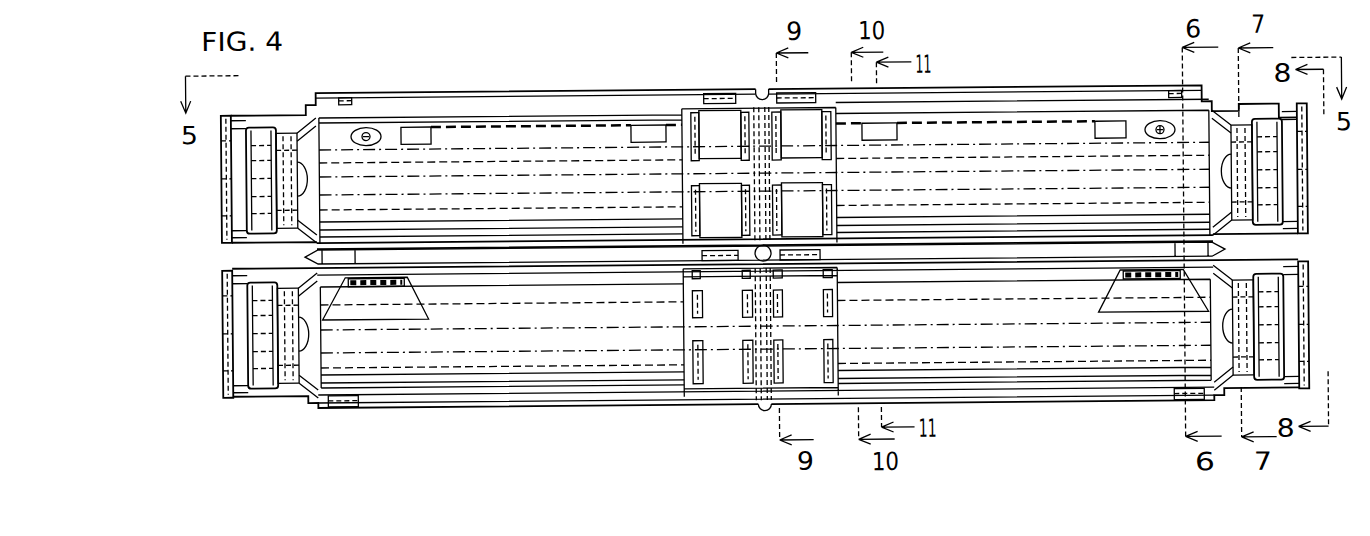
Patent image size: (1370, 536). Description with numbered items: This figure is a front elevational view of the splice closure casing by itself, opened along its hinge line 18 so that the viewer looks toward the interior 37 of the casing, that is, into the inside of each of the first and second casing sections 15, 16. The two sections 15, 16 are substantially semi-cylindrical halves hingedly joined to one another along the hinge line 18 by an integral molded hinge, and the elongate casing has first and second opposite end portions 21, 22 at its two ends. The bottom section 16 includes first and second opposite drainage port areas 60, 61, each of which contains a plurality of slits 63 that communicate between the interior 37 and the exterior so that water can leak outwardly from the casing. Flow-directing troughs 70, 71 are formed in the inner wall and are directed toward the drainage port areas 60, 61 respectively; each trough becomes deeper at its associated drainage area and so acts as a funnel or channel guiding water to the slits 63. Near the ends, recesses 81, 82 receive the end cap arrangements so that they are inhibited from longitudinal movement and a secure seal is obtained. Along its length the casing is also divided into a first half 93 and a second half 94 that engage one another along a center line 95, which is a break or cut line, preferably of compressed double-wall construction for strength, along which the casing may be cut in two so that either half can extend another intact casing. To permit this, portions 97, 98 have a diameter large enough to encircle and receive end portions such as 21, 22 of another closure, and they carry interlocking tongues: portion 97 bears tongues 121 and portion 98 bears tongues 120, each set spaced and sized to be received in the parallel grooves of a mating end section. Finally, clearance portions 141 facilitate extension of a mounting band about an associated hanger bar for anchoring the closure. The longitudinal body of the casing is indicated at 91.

The first casing section 15 is at (443, 93).
The second casing section 16 is at (395, 404).
The hinge line 18 is at (313, 258).
The first end portion 21 is at (276, 113).
The second end portion 22 is at (1307, 126).
The interior 37 is at (497, 189).
The first drainage port area 60 is at (371, 290).
The second drainage port area 61 is at (1143, 286).
The slits 63 is at (375, 278).
The first trough 70 is at (536, 290).
The second trough 71 is at (982, 288).
The first recess 81 is at (247, 117).
The second recess 82 is at (1280, 126).
The upper body 91 is at (538, 206).
The first casing half 93 is at (545, 93).
The second casing half 94 is at (983, 94).
The center line 95 is at (760, 101).
The end portion-receiving portion 97 is at (735, 157).
The end portion-receiving portion 98 is at (813, 157).
The tongues 120 is at (823, 204).
The tongues 121 is at (742, 204).
The clearance portions 141 is at (415, 145).